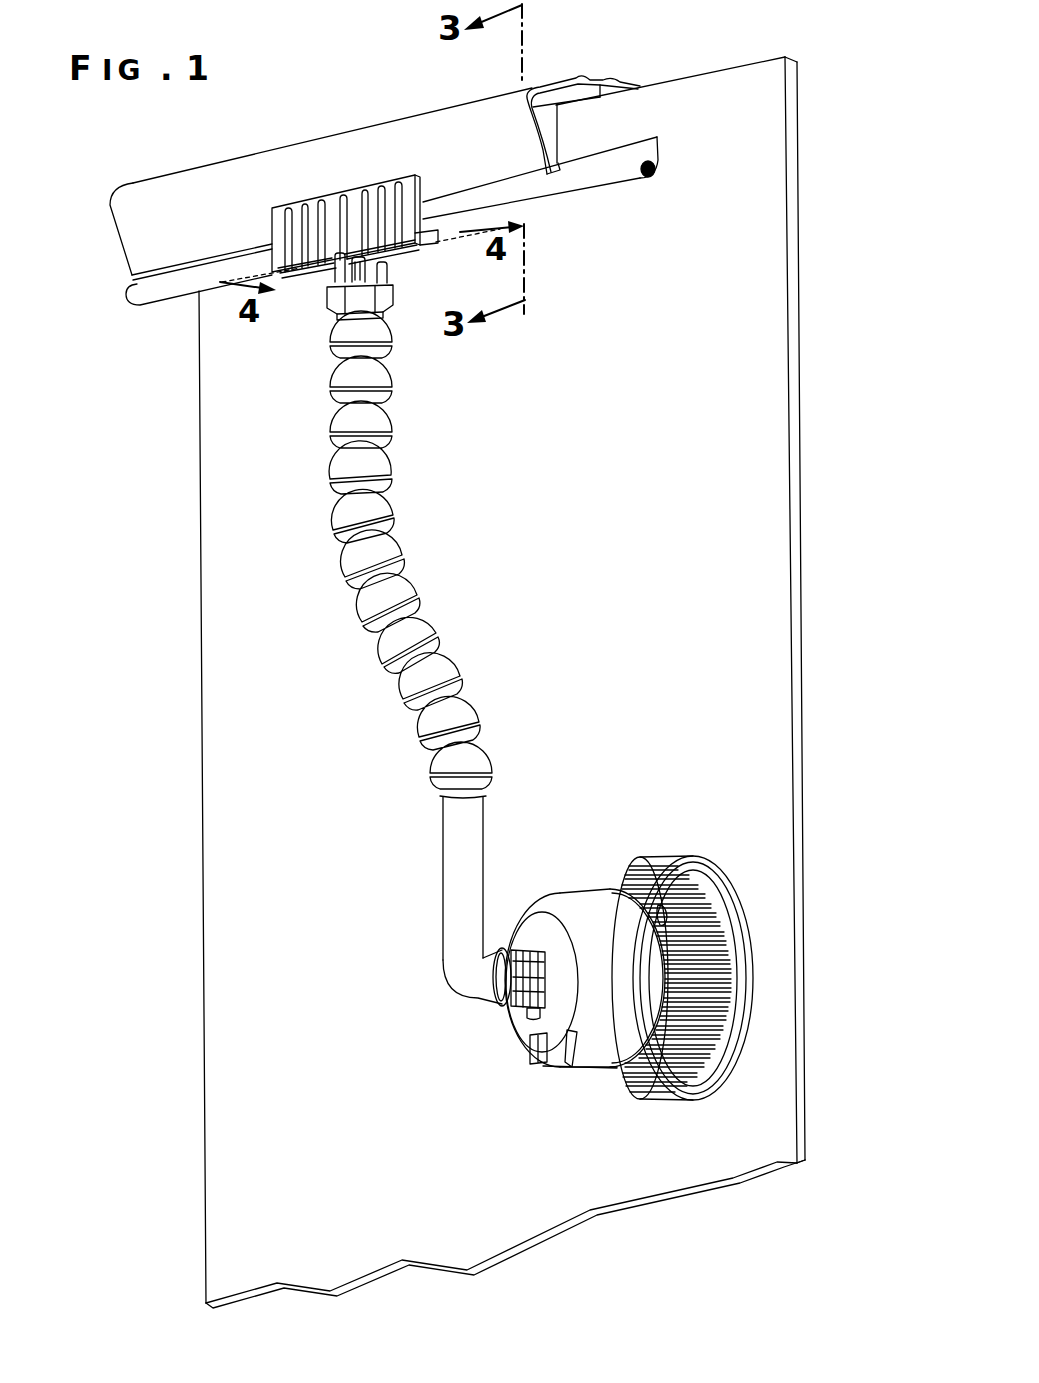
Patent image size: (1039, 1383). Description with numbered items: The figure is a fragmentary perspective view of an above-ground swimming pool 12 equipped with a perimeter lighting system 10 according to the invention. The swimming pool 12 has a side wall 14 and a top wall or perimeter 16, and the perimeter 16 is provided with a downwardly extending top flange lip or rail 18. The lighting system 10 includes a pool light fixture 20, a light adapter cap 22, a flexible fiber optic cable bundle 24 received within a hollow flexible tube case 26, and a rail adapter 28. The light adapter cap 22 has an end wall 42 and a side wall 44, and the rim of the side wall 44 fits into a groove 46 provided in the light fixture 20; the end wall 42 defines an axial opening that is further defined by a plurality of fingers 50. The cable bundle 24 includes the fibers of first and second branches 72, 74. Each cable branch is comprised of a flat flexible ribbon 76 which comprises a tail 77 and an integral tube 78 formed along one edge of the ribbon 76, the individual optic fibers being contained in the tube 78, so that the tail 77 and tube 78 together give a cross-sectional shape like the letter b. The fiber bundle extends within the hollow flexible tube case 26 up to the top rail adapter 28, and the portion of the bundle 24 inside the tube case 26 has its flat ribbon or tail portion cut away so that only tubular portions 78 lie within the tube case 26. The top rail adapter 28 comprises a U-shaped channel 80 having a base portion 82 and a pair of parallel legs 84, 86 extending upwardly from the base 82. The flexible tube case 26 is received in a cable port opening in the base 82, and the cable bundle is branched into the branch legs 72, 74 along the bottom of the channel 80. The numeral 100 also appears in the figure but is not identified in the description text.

The perimeter lighting system 10 is at (155, 394).
The above-ground swimming pool 12 is at (624, 90).
The side wall 14 is at (768, 380).
The top wall or perimeter 16 is at (281, 213).
The top flange lip or rail 18 is at (180, 183).
The pool light fixture 20 is at (586, 955).
The light adapter cap 22 is at (618, 1058).
The flexible fiber optic cable bundle 24 is at (354, 310).
The hollow flexible tube case 26 is at (388, 510).
The rail adapter 28 is at (340, 212).
The end wall 42 is at (500, 1020).
The side wall 44 is at (592, 890).
The groove 46 is at (668, 908).
The fingers 50 is at (545, 962).
The first branch 72 is at (149, 300).
The second branch 74 is at (552, 171).
The flat flexible ribbon 76 is at (627, 166).
The tail 77 is at (583, 158).
The tube 78 is at (530, 208).
The U-shaped channel 80 is at (422, 190).
The base portion 82 is at (299, 285).
The leg 84 is at (330, 200).
The leg 86 is at (440, 240).
The rail flange 100 is at (133, 244).